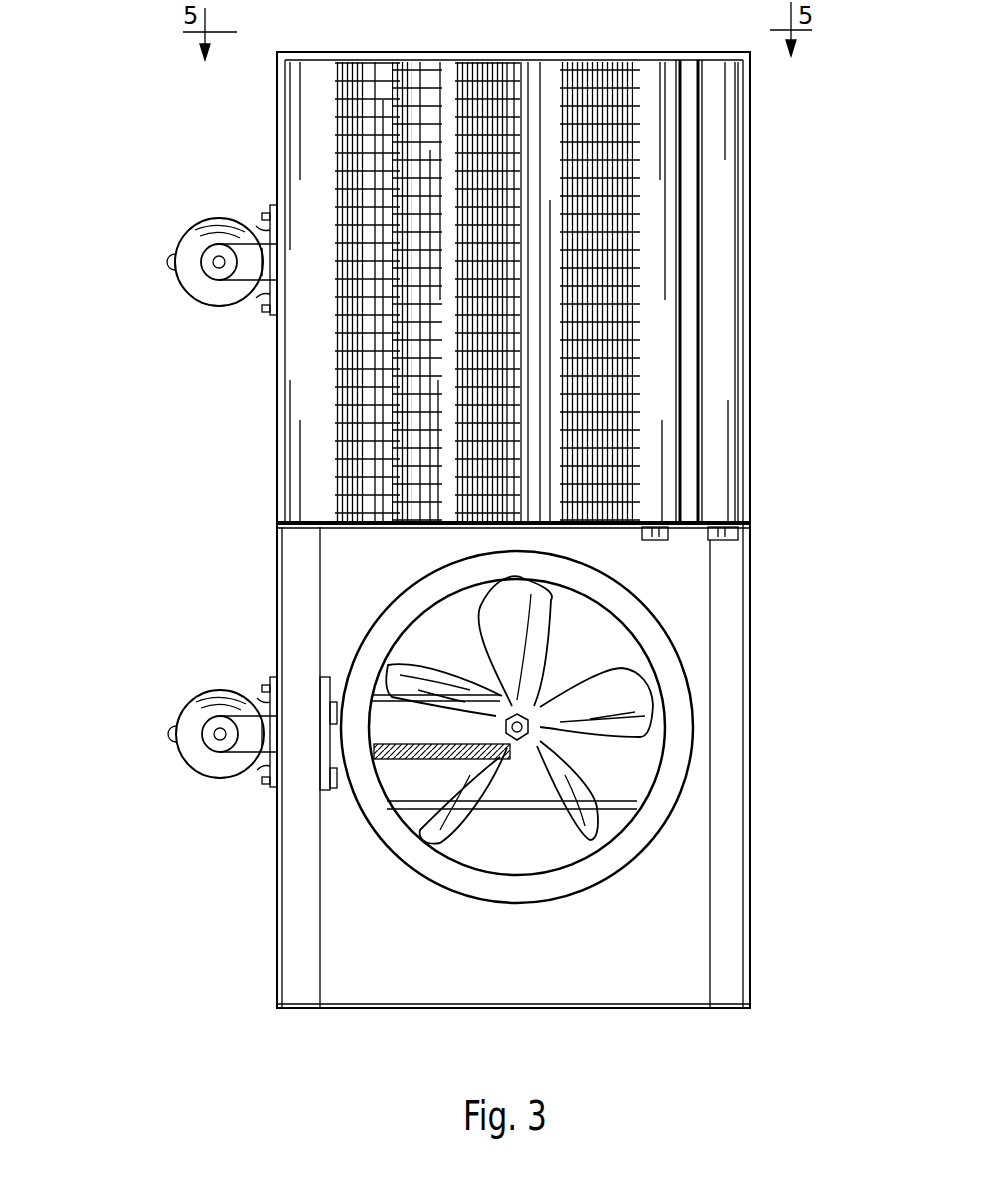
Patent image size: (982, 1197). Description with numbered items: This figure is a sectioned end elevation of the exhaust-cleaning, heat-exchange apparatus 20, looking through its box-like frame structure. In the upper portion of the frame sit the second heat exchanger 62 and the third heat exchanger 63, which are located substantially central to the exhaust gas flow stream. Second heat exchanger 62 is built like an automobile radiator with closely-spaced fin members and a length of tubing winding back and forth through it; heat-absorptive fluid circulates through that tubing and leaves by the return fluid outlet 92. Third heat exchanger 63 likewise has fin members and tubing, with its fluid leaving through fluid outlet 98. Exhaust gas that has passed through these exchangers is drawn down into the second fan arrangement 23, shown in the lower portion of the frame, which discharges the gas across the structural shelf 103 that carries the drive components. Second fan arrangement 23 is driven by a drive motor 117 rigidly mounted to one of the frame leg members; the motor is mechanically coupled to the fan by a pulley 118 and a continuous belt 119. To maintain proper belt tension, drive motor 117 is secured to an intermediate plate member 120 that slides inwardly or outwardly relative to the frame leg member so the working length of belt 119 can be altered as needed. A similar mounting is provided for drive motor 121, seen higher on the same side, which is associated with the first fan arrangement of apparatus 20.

The exhaust-cleaning, heat-exchange apparatus 20 is at (795, 66).
The second fan arrangement 23 is at (630, 765).
The second heat exchanger 62 is at (728, 281).
The third heat exchanger 63 is at (663, 355).
The return fluid outlet 92 is at (720, 533).
The fluid outlet 98 is at (654, 535).
The structural shelf 103 is at (540, 805).
The drive motor 117 is at (206, 696).
The pulley 118 is at (212, 738).
The continuous belt 119 is at (252, 751).
The intermediate plate member 120 is at (325, 765).
The drive motor 121 is at (180, 242).